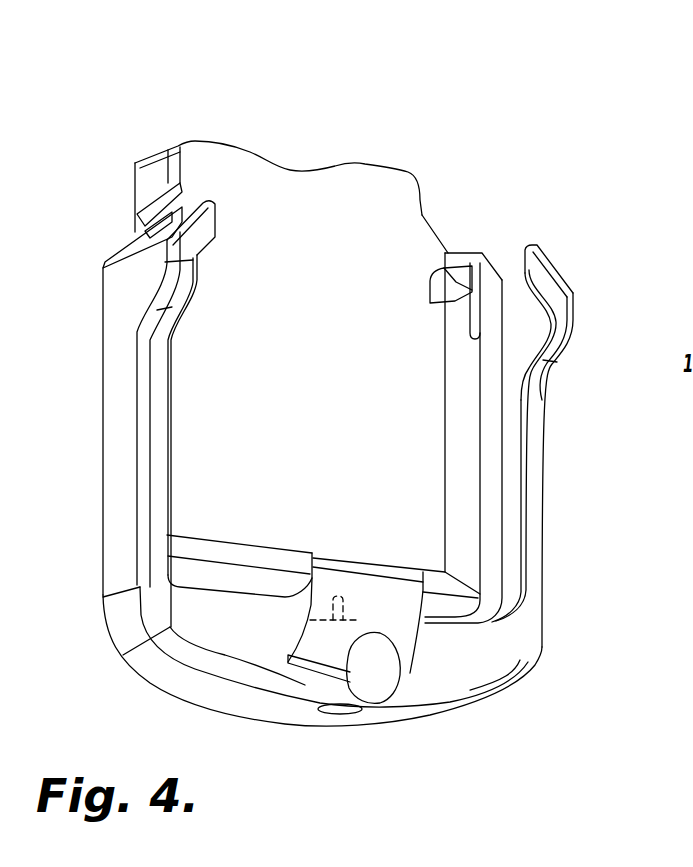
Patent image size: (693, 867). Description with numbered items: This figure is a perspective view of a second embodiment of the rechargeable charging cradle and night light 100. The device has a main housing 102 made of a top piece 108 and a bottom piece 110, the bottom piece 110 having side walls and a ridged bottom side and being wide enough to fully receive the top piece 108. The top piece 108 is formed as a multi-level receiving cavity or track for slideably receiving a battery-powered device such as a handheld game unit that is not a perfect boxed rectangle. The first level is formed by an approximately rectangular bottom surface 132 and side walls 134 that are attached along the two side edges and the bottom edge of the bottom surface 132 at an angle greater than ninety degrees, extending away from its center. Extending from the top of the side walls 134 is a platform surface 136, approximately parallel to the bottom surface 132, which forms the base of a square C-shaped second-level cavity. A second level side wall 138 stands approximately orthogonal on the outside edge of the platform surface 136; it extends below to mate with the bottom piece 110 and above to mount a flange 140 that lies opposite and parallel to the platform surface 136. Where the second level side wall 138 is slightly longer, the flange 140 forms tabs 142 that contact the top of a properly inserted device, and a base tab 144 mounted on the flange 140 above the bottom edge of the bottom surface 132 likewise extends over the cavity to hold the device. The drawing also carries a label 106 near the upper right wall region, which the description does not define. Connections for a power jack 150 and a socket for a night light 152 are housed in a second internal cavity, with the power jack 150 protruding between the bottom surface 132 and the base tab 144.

The rechargeable charging cradle and night light 100 is at (408, 135).
The main housing 102 is at (545, 528).
The retention slot and clip 106 is at (517, 297).
The top piece 108 is at (240, 713).
The bottom piece 110 is at (132, 157).
The bottom surface 132 is at (410, 230).
The side walls 134 is at (245, 558).
The platform surface 136 is at (488, 430).
The second level side wall 138 is at (115, 460).
The flange 140 is at (512, 617).
The tabs 142 is at (197, 237).
The base tab 144 is at (413, 620).
The power jack 150 is at (340, 607).
The night light 152 is at (360, 695).